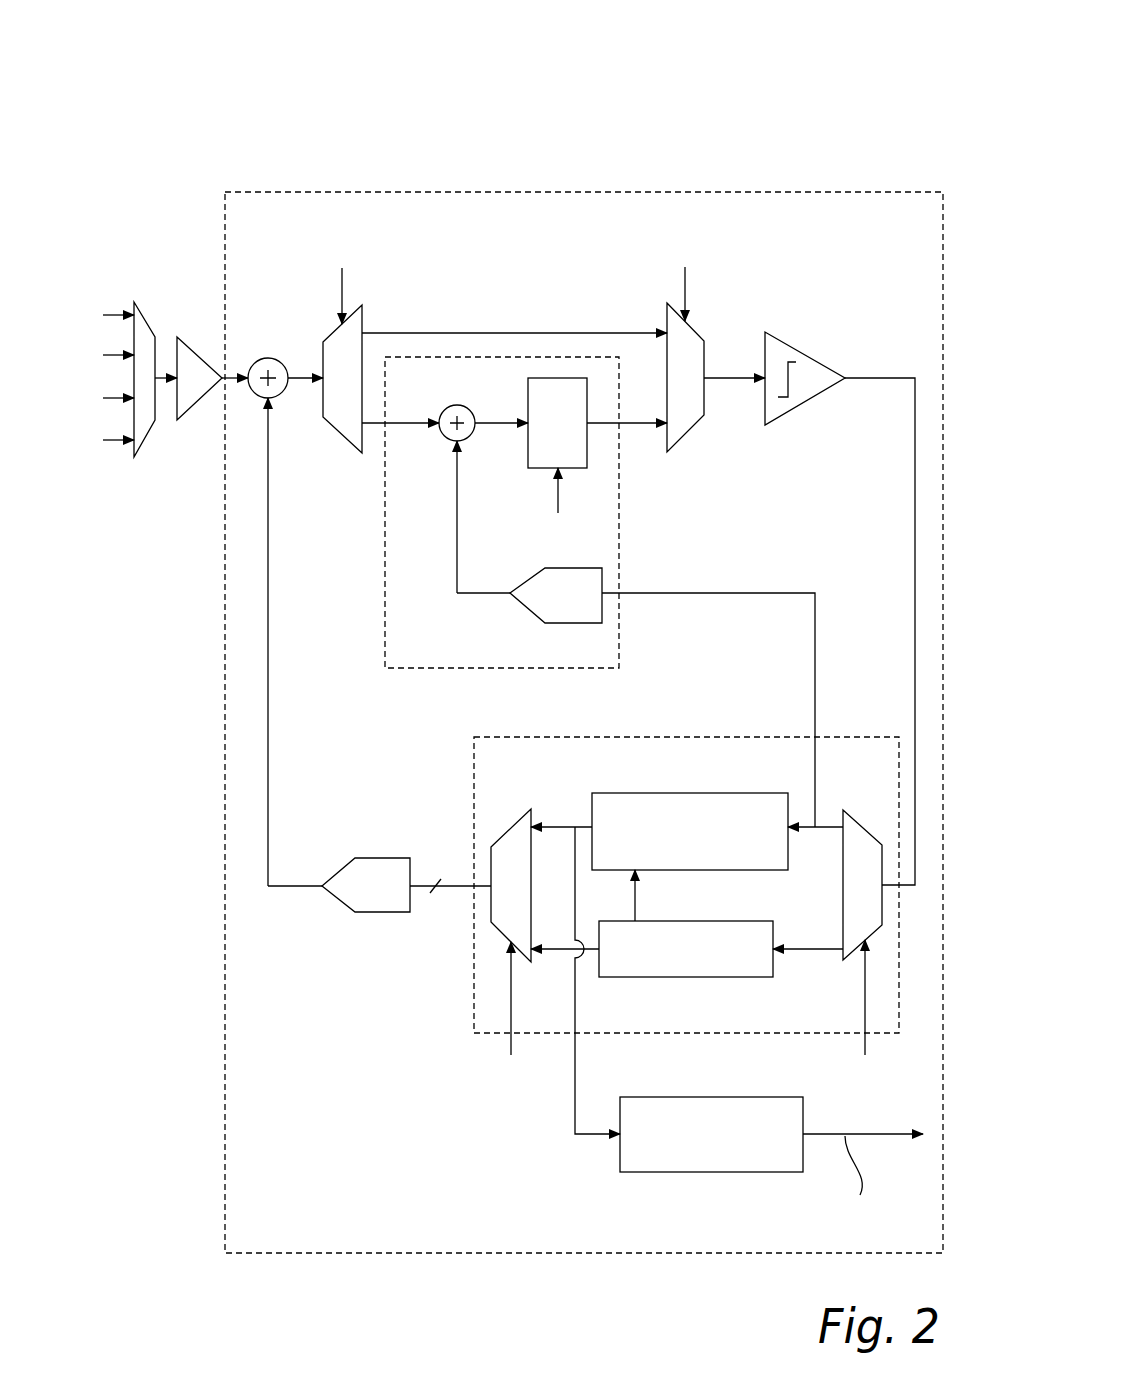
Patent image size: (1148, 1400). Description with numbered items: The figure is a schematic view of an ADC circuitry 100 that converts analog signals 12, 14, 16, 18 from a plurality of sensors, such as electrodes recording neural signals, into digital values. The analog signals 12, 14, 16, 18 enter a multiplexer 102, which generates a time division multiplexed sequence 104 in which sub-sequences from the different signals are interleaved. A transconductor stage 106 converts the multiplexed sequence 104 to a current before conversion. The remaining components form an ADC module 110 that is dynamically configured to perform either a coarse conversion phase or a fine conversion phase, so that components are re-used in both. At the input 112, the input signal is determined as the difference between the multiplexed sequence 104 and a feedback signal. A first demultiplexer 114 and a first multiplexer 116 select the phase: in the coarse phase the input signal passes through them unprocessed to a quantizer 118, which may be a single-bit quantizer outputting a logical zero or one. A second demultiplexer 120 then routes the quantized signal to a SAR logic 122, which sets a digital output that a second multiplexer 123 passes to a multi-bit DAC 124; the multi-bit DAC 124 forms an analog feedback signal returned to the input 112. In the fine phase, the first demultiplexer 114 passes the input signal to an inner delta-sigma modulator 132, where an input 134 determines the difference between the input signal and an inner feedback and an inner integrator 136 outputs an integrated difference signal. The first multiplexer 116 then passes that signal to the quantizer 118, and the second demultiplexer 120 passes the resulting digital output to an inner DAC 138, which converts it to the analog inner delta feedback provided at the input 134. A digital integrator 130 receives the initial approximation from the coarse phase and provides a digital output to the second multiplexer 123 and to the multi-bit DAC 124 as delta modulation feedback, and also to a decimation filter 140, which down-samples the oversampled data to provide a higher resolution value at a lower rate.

The ADC circuitry 100 is at (780, 85).
The ADC module 110 is at (790, 192).
The analog signal 12 is at (136, 306).
The analog signal 14 is at (122, 311).
The analog signal 16 is at (122, 400).
The analog signal 18 is at (122, 440).
The multiplexer 102 is at (137, 322).
The time division multiplexed sequence 104 is at (163, 352).
The transconductor stage 106 is at (183, 418).
The input 112 is at (268, 357).
The first demultiplexer 114 is at (362, 310).
The first multiplexer 116 is at (706, 338).
The quantizer 118 is at (784, 338).
The second demultiplexer 120 is at (870, 840).
The SAR logic 122 is at (648, 977).
The second multiplexer 123 is at (500, 840).
The multi-bit digital-to-analog converter 124 is at (375, 858).
The digital integrator 130 is at (592, 806).
The inner delta-sigma modulator 132 is at (370, 587).
The input 134 is at (442, 432).
The inner integrator 136 is at (530, 466).
The inner DAC 138 is at (522, 605).
The decimation filter 140 is at (753, 1097).